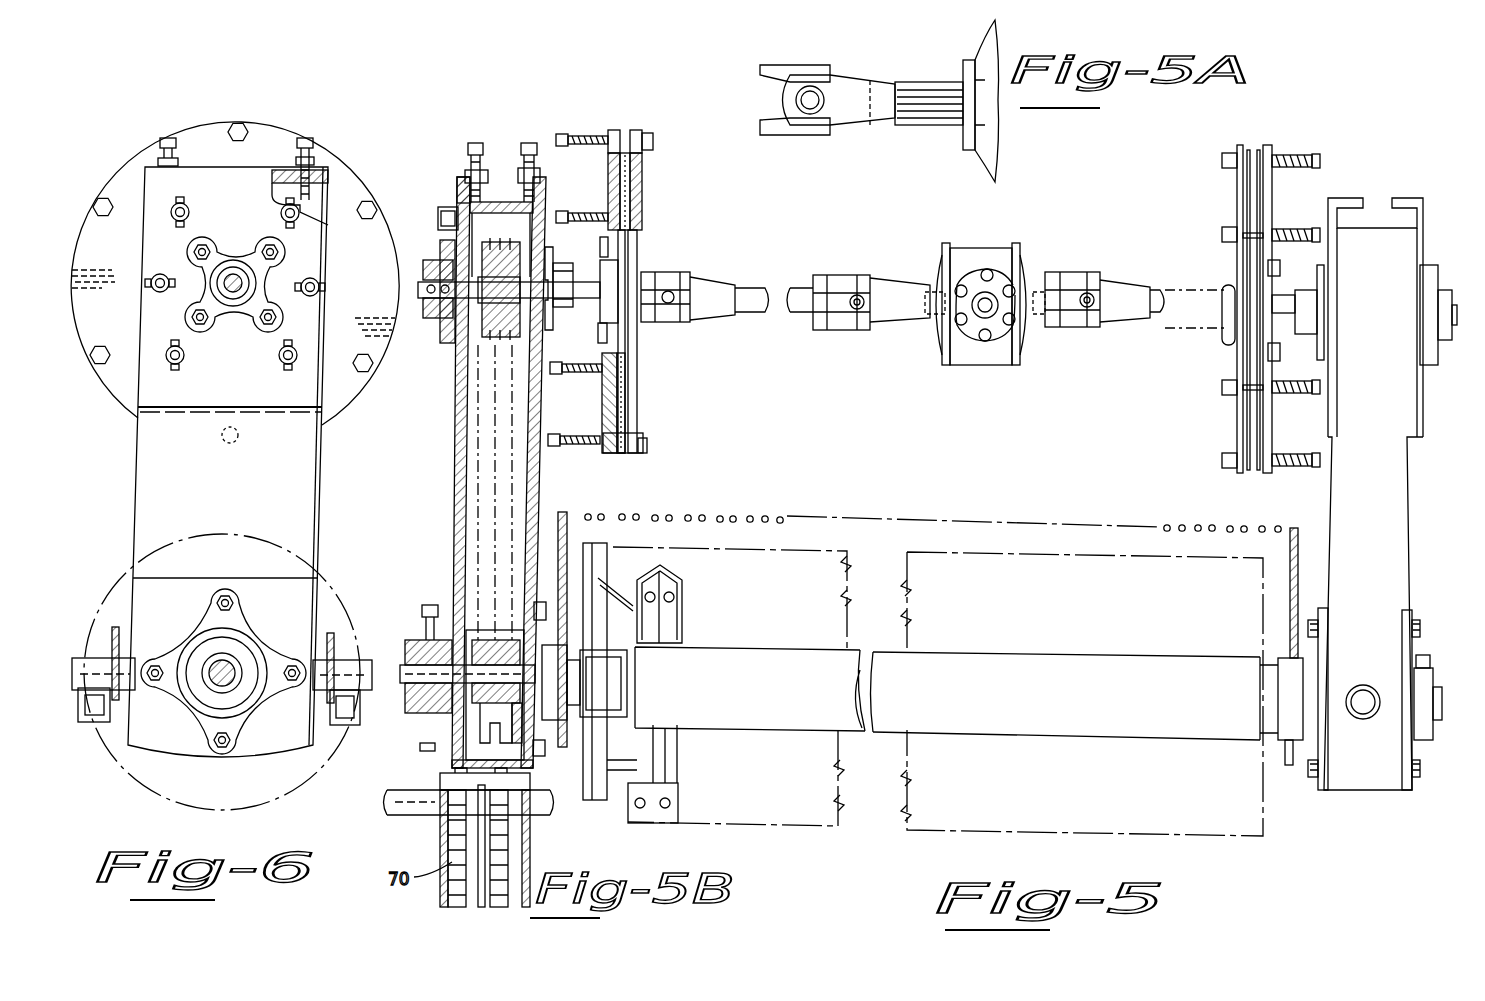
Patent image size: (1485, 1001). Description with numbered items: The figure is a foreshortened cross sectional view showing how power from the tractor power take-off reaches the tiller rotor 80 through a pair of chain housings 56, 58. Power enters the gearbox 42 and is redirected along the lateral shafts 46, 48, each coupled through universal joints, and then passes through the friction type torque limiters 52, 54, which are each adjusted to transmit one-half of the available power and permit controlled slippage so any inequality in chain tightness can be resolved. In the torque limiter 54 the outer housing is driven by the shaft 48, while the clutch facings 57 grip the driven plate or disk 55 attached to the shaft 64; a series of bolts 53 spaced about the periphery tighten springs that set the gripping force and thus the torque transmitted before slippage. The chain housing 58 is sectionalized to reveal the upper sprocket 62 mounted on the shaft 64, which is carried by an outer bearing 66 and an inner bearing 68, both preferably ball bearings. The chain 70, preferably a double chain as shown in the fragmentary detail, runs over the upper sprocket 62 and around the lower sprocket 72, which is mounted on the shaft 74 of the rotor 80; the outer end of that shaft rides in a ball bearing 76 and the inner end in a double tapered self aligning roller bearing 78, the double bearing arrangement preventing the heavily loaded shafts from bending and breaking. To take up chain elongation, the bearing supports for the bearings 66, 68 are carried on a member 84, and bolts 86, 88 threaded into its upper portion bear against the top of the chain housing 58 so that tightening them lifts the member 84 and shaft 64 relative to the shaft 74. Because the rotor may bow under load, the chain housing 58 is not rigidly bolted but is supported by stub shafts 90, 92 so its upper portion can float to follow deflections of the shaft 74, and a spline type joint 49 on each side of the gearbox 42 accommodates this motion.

In FIG. 5, the gearbox 42 is at (1000, 258).
In FIG. 5, the lateral shaft 46 is at (1193, 300).
In FIG. 5, the lateral shaft 48 is at (752, 287).
In FIG. 5A, the spline type joint 49 is at (918, 95).
In FIG. 5, the friction type torque limiter 52 is at (1291, 144).
In FIG. 5B, the bolts 53 is at (565, 134).
In FIG. 5B, the friction type torque limiter 54 is at (658, 122).
In FIG. 5B, the driven plate or disk 55 is at (625, 205).
In FIG. 5, the chain housing 56 is at (1393, 265).
In FIG. 5B, the clutch facings 57 is at (620, 395).
In FIG. 6, the chain housing 58 is at (167, 440).
In FIG. 5B, the chain housing 58 is at (460, 425).
In FIG. 5B, the upper sprocket 62 is at (490, 242).
In FIG. 5B, the shaft 64 is at (421, 294).
In FIG. 5B, the outer bearing 66 is at (437, 262).
In FIG. 5B, the inner bearing 68 is at (567, 315).
In FIG. 5B, the chain 70 is at (475, 483).
In FIG. 5B, the lower sprocket 72 is at (470, 732).
In FIG. 5B, the shaft 74 is at (400, 677).
In FIG. 5B, the ball bearing 76 is at (420, 637).
In FIG. 5, the double tapered self aligning roller bearing 78 is at (570, 662).
In FIG. 5, the tiller rotor 80 is at (1103, 641).
In FIG. 5B, the member 84 is at (457, 180).
In FIG. 5B, the bolt 86 is at (477, 142).
In FIG. 5B, the bolt 88 is at (531, 144).
In FIG. 6, the stub shaft 90 is at (74, 676).
In FIG. 6, the stub shaft 92 is at (338, 665).